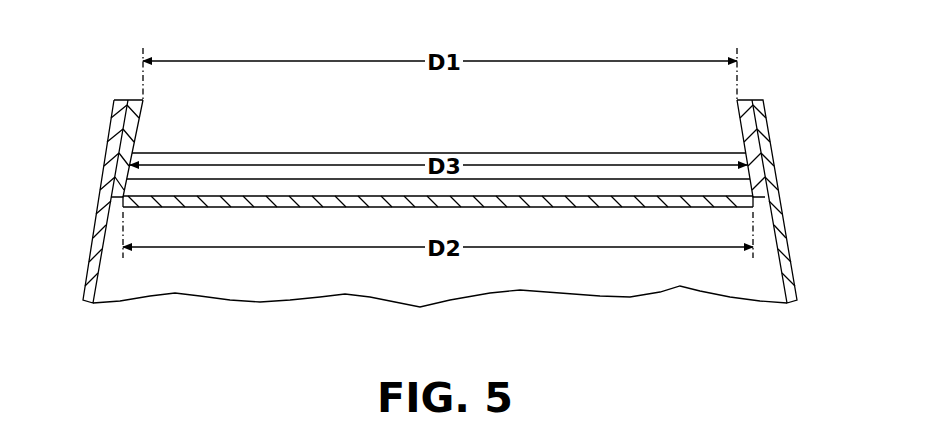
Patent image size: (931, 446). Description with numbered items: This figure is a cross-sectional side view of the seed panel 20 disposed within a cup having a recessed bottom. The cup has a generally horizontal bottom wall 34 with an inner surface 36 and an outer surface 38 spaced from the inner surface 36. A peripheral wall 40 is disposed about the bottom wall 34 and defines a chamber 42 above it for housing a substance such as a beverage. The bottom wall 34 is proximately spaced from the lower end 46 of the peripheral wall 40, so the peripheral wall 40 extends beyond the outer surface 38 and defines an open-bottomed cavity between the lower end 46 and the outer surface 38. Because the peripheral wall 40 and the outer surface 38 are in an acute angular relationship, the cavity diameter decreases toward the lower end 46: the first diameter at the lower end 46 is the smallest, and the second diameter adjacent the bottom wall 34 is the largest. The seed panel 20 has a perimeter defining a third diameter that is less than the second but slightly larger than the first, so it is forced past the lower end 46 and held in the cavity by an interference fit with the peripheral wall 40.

The seed panel 20 is at (676, 152).
The bottom wall 34 is at (370, 202).
The inner surface 36 is at (592, 208).
The outer surface 38 is at (727, 195).
The peripheral wall 40 is at (93, 230).
The chamber 42 is at (255, 275).
The lower end 46 is at (125, 97).